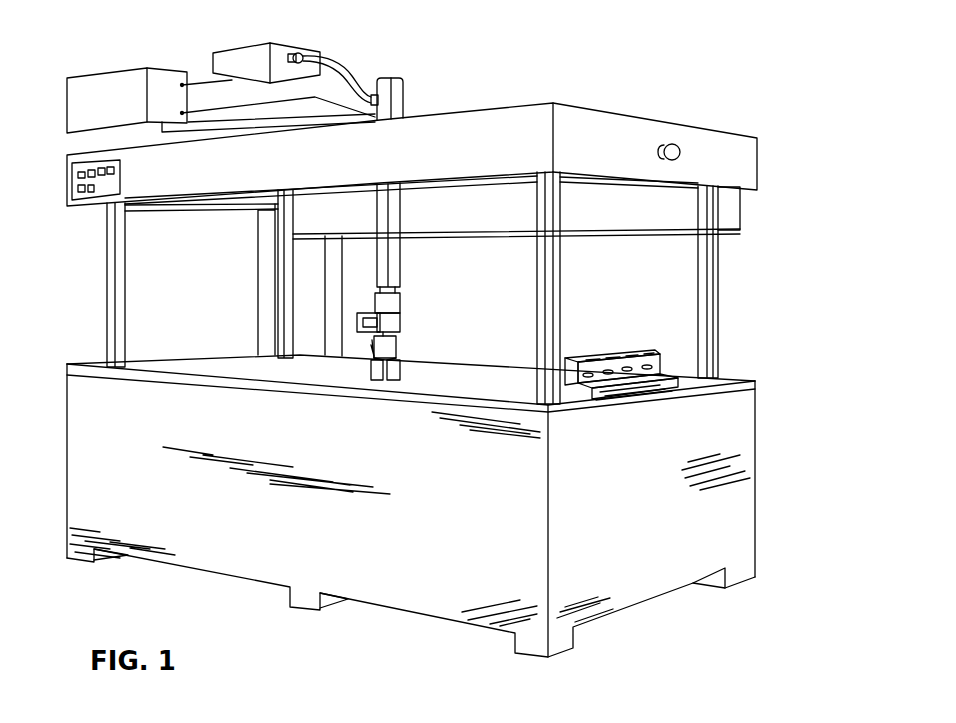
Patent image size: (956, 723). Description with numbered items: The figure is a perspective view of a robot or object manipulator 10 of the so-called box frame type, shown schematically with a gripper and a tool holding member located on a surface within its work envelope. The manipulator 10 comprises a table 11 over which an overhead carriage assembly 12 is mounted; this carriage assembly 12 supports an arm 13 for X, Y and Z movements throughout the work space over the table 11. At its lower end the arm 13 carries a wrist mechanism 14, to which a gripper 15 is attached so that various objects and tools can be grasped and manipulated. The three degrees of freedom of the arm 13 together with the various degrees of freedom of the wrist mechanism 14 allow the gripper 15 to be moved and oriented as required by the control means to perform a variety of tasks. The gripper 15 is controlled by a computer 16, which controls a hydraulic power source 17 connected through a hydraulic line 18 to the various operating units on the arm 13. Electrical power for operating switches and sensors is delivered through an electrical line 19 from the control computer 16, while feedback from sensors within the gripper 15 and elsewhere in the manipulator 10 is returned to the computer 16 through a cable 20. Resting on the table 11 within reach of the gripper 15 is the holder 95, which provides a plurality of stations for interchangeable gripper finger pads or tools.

The manipulator 10 is at (94, 284).
The table 11 is at (480, 362).
The overhead carriage assembly 12 is at (412, 100).
The arm 13 is at (402, 263).
The wrist mechanism 14 is at (402, 297).
The gripper 15 is at (402, 344).
The computer 16 is at (101, 78).
The hydraulic power source 17 is at (235, 53).
The hydraulic line 18 is at (340, 80).
The electrical line 19 is at (280, 104).
The cable 20 is at (222, 130).
The holder 95 is at (632, 350).